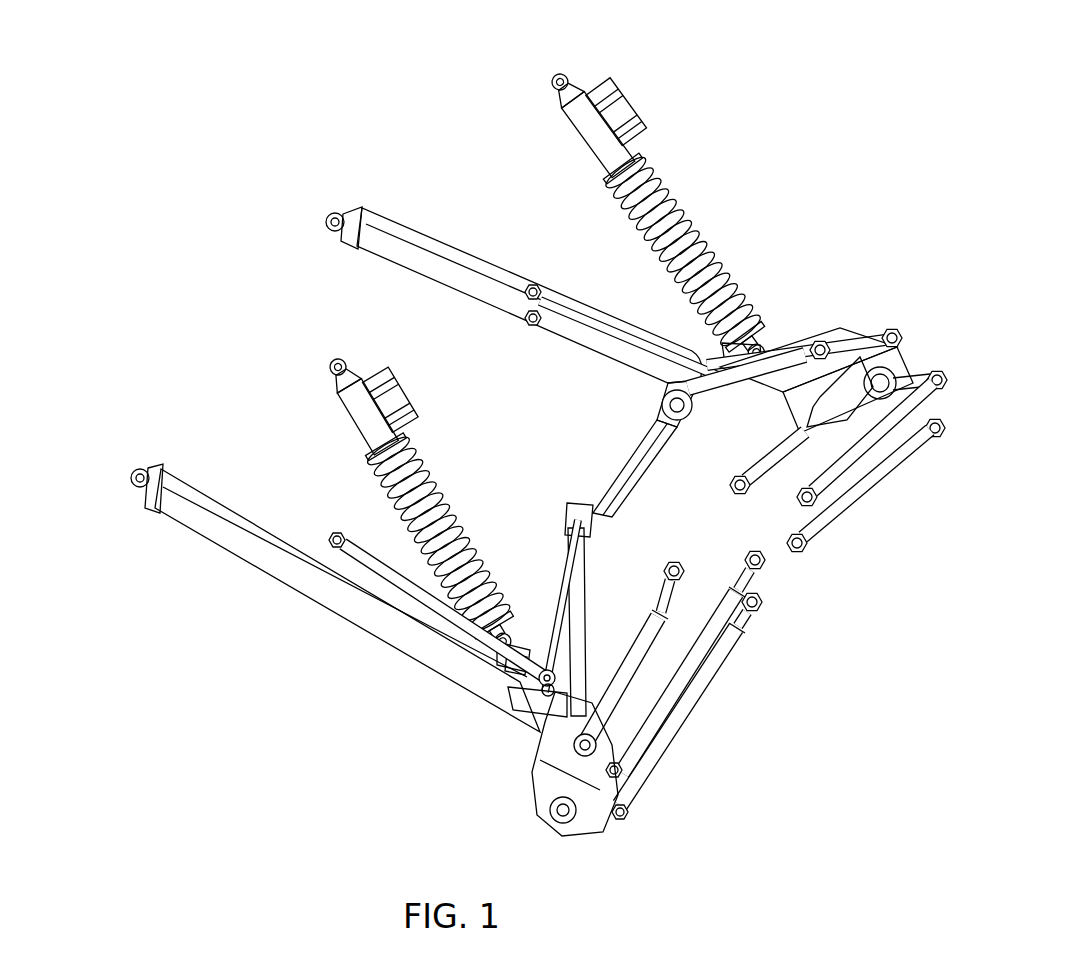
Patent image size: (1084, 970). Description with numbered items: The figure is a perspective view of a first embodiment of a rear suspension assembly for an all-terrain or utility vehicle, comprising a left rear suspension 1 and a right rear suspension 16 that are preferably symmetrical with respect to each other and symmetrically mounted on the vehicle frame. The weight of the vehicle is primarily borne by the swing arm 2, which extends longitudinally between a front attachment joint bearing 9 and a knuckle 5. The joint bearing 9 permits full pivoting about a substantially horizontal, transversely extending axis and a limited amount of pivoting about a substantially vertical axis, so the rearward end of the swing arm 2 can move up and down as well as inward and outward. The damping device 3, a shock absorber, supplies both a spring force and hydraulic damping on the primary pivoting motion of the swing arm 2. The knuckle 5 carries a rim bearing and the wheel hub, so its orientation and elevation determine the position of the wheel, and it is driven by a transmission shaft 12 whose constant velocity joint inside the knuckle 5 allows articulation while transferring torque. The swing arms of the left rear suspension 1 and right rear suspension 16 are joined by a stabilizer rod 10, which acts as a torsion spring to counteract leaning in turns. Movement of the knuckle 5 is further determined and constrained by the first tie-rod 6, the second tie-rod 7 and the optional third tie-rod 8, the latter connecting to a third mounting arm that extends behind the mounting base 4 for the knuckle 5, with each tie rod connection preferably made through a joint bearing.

The left rear suspension 1 is at (285, 432).
The swing arm 2 is at (238, 538).
The damping device 3 is at (377, 425).
The mounting base for the knuckle 4 is at (573, 710).
The knuckle 5 is at (563, 783).
The first tie-rod 6 is at (570, 572).
The second tie-rod 7 is at (678, 677).
The third tie-rod 8 is at (702, 668).
The joint bearing 9 is at (138, 470).
The stabilizer rod 10 is at (415, 572).
The transmission shaft 12 is at (632, 668).
The right rear suspension 16 is at (442, 221).